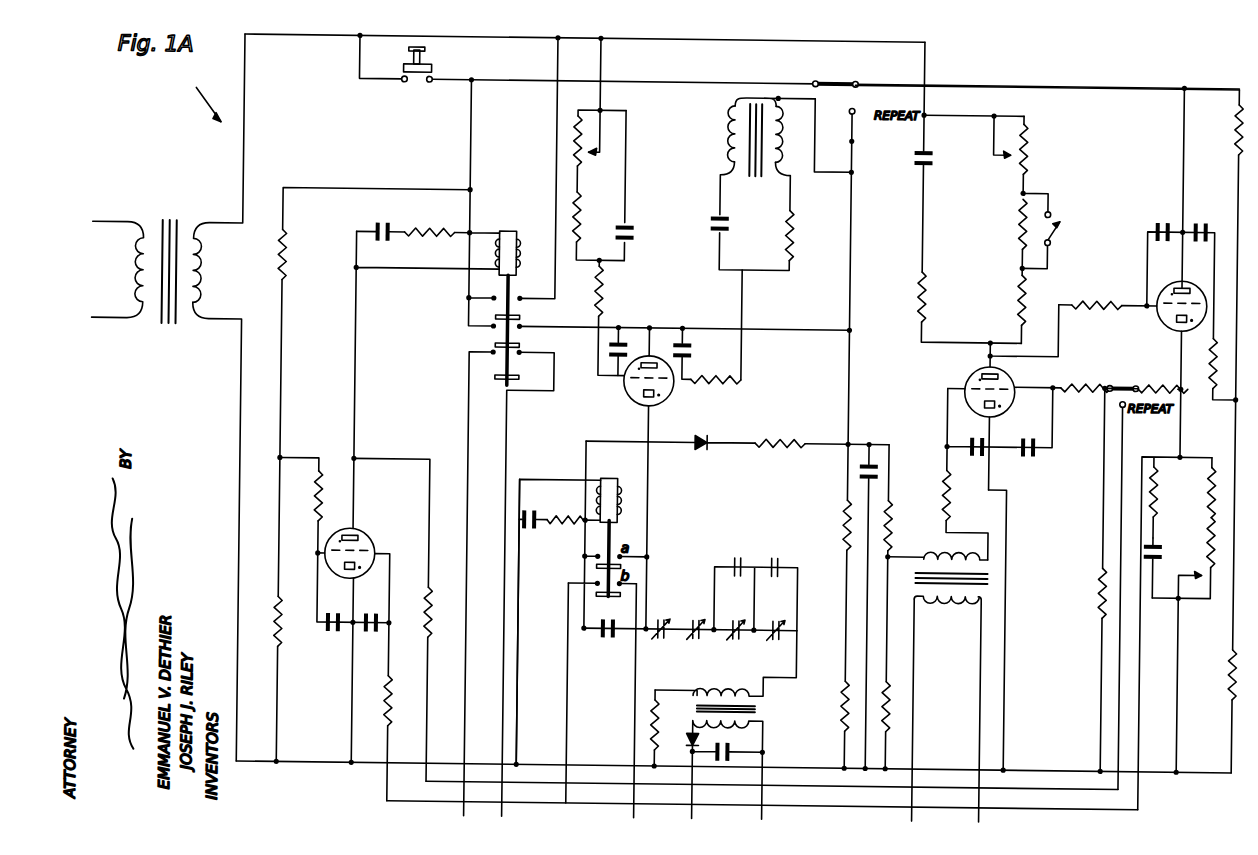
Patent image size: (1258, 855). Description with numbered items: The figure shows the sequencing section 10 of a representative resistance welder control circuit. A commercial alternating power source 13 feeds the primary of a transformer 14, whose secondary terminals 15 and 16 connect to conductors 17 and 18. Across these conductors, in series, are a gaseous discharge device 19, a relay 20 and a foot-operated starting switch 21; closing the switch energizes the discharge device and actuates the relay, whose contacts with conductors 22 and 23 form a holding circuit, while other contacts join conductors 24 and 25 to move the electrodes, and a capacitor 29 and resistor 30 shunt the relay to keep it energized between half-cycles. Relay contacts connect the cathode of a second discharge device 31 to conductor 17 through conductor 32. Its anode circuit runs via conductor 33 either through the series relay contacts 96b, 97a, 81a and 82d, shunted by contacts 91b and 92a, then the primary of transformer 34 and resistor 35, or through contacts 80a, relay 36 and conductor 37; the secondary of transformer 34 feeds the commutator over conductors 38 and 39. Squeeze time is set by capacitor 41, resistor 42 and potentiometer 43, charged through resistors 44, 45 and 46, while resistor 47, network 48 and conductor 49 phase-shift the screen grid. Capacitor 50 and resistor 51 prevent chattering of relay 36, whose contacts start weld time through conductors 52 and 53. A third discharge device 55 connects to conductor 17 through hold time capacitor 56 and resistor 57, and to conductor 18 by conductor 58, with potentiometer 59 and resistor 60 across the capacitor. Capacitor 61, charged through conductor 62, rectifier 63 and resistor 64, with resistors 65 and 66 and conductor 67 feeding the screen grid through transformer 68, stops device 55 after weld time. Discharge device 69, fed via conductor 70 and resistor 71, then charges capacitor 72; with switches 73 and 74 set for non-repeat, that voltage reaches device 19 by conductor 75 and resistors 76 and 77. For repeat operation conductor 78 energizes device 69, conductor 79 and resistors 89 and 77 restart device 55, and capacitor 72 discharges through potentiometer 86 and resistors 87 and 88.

The sequencing section 10 is at (201, 101).
The commercial alternating power source 13 is at (116, 222).
The transformer 14 is at (164, 325).
The secondary terminal 15 is at (202, 222).
The secondary terminal 16 is at (213, 321).
The conductor 17 is at (298, 36).
The conductor 18 is at (320, 763).
The gaseous discharge device 19 is at (380, 540).
The relay 20 is at (514, 222).
The starting switch 21 is at (438, 60).
The conductor 22 is at (558, 144).
The conductor 23 is at (462, 290).
The conductor 24 is at (466, 418).
The conductor 25 is at (516, 440).
The capacitor 29 is at (382, 226).
The resistor 30 is at (433, 228).
The second gaseous discharge device 31 is at (678, 392).
The conductor 32 is at (568, 316).
The conductor 33 is at (656, 505).
The transformer 34 is at (772, 707).
The resistor 35 is at (660, 734).
The relay 36 is at (616, 472).
The conductor 37 is at (545, 694).
The conductor 38 is at (772, 792).
The conductor 39 is at (702, 792).
The capacitor 41 is at (636, 224).
The resistor 42 is at (584, 206).
The adjustable potentiometer 43 is at (580, 120).
The resistor 44 is at (848, 510).
The resistor 45 is at (848, 706).
The resistor 46 is at (606, 290).
The resistor 47 is at (722, 364).
The network 48 is at (766, 210).
The conductor 49 is at (858, 272).
The capacitor 50 is at (534, 512).
The resistor 51 is at (570, 512).
The conductor 52 is at (642, 684).
The conductor 53 is at (578, 730).
The third discharge device 55 is at (967, 380).
The hold time capacitor 56 is at (934, 152).
The resistor 57 is at (928, 292).
The conductor 58 is at (1012, 530).
The potentiometer 59 is at (1032, 142).
The resistor 60 is at (1030, 296).
The capacitor 61 is at (880, 458).
The conductor 62 is at (608, 438).
The rectifier 63 is at (714, 430).
The resistor 64 is at (796, 432).
The resistor 65 is at (898, 516).
The resistor 66 is at (939, 684).
The conductor 67 is at (912, 551).
The transformer 68 is at (988, 592).
The discharge device 69 is at (1165, 320).
The conductor 70 is at (1062, 334).
The resistor 71 is at (1122, 278).
The capacitor 72 is at (1166, 548).
The switch 73 is at (836, 80).
The switch 74 is at (1128, 372).
The conductor 75 is at (1143, 805).
The resistor 76 is at (1162, 372).
The resistor 77 is at (1082, 388).
The conductor 78 is at (1076, 82).
The conductor 79 is at (1230, 651).
The relay contacts 80a is at (618, 636).
The relay contacts 81a is at (743, 636).
The relay contacts 82d is at (783, 636).
The potentiometer 86 is at (1215, 538).
The resistor 87 is at (1210, 496).
The resistor 88 is at (1168, 470).
The resistor 89 is at (1104, 580).
The relay contacts 91b is at (756, 538).
The relay contacts 92a is at (795, 538).
The relay contacts 96b is at (668, 636).
The relay contacts 97a is at (703, 636).